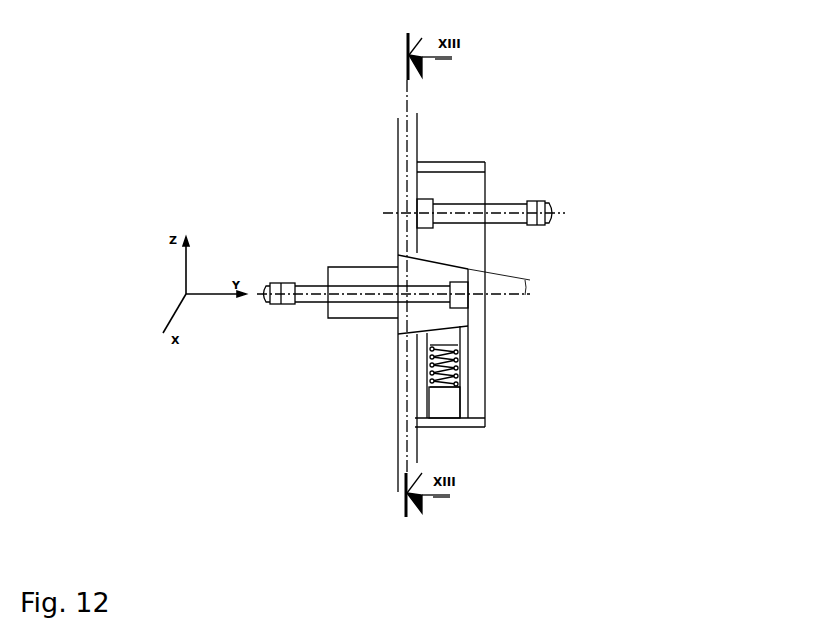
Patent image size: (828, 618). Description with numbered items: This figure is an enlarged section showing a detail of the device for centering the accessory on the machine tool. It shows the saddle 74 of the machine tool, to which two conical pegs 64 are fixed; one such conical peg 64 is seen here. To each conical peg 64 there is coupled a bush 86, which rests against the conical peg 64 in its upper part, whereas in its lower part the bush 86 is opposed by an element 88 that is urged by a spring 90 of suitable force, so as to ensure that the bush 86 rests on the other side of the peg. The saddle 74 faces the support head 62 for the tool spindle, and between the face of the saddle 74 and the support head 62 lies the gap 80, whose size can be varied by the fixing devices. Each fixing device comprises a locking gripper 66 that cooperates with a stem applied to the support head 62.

The support head 62 is at (575, 505).
The conical peg 64 is at (432, 276).
The locking gripper 66 is at (305, 602).
The saddle 74 is at (258, 141).
The gap 80 is at (402, 402).
The bush 86 is at (465, 190).
The element 88 is at (447, 338).
The spring 90 is at (445, 370).